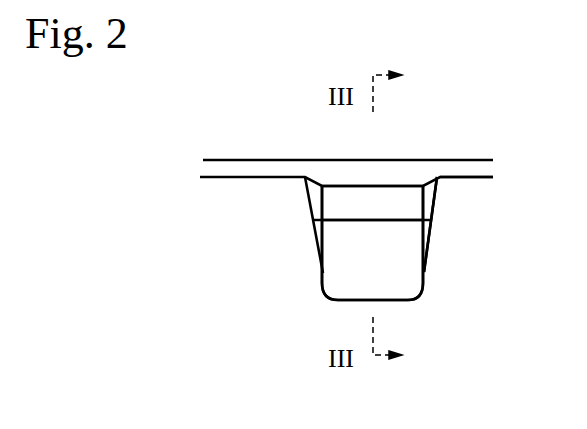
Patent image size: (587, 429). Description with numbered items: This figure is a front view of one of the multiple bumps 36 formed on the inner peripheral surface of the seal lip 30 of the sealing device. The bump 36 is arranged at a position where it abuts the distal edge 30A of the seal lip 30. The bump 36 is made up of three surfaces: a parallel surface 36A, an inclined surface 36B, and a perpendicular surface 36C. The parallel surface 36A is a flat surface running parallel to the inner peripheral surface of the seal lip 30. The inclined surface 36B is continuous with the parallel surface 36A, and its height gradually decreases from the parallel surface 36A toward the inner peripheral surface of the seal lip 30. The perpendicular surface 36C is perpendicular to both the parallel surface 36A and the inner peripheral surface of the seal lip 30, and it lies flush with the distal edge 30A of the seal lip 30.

The seal lip 30 is at (235, 197).
The distal edge 30A is at (430, 175).
The bump 36 is at (375, 205).
The parallel surface 36A is at (338, 203).
The inclined surface 36B is at (342, 260).
The perpendicular surface 36C is at (390, 183).